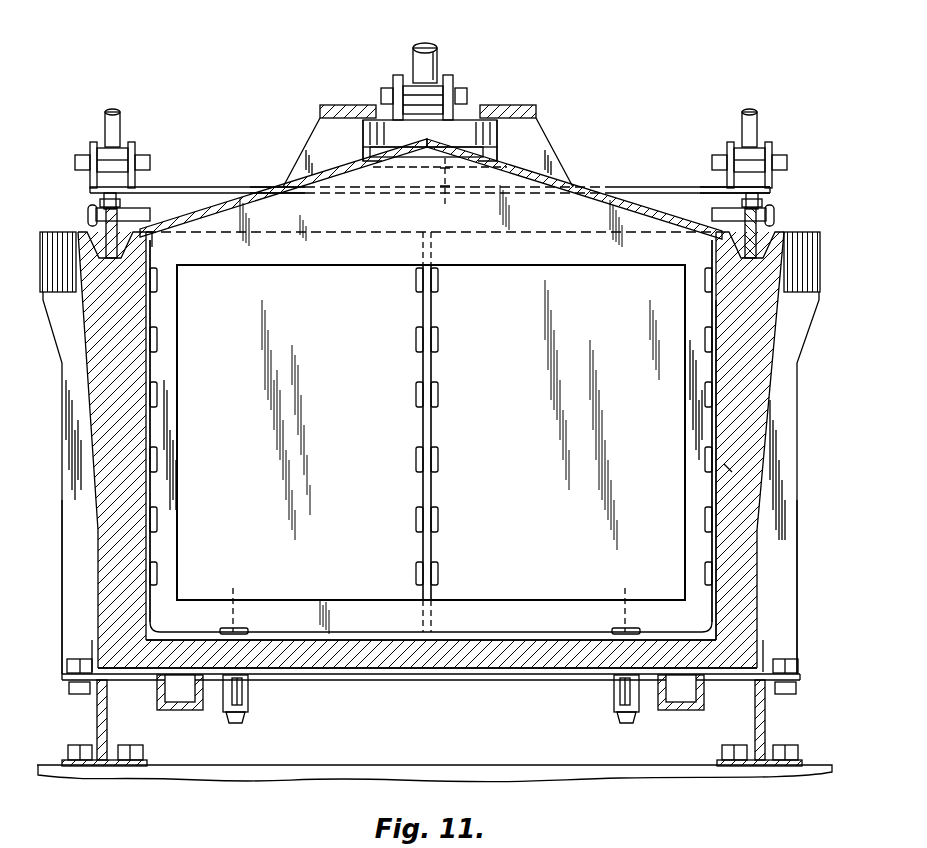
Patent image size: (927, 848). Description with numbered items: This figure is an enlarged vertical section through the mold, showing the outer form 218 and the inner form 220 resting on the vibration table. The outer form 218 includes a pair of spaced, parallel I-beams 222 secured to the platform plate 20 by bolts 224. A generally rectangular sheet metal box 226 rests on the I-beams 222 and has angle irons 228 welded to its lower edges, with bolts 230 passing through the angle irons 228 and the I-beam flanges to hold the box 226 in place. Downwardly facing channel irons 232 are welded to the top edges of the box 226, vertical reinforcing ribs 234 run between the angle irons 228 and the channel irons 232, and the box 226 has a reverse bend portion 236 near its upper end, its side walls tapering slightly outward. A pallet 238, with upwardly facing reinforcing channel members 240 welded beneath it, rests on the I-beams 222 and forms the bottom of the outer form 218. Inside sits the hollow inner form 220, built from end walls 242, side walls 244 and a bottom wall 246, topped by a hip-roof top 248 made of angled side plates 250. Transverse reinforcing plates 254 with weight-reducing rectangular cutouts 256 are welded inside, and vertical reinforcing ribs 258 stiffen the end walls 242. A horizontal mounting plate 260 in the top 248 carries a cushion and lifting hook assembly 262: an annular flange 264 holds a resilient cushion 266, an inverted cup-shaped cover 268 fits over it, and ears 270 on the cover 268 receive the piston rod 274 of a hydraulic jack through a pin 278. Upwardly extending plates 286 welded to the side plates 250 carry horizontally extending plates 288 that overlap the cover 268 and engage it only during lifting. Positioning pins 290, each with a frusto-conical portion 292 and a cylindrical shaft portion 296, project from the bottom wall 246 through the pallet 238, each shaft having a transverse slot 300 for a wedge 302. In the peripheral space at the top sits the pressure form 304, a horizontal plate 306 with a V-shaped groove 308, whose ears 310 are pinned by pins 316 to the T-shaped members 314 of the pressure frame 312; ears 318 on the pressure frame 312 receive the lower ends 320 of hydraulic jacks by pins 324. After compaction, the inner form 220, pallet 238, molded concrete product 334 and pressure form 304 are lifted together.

The platform plate 20 is at (410, 765).
The outer form 218 is at (806, 452).
The inner form 220 is at (650, 187).
The I-beams 222 is at (100, 722).
The bolts 224 is at (75, 752).
The sheet metal box 226 is at (103, 520).
The angle irons 228 is at (95, 645).
The bolts 230 is at (70, 662).
The channel irons 232 is at (48, 232).
The reinforcing ribs 234 is at (68, 430).
The reverse bend portion 236 is at (83, 323).
The pallet 238 is at (382, 668).
The reinforcing channel members 240 is at (172, 708).
The end walls 242 is at (517, 270).
The side walls 244 is at (150, 337).
The bottom wall 246 is at (448, 637).
The top 248 is at (231, 186).
The angled side plates 250 is at (322, 194).
The reinforcing plates 254 is at (583, 256).
The rectangular cutouts 256 is at (368, 270).
The vertical reinforcing ribs 258 is at (423, 435).
The mounting plate 260 is at (445, 160).
The cushion and lifting hook assembly 262 is at (470, 67).
The annular flange 264 is at (380, 162).
The resilient cushion 266 is at (483, 155).
The cup-shaped cover 268 is at (364, 133).
The ears 270 is at (398, 75).
The piston rod 274 is at (428, 43).
The pin 278 is at (464, 88).
The upwardly extending plates 286 is at (312, 128).
The horizontally extending plates 288 is at (348, 105).
The positioning pins 290 is at (432, 599).
The frusto-conical portion 292 is at (262, 642).
The cylindrical shaft portion 296 is at (240, 723).
The transverse slot 300 is at (244, 690).
The wedge 302 is at (248, 700).
The pressure form 304 is at (87, 233).
The horizontal plate 306 is at (152, 242).
The V-shaped groove 308 is at (125, 262).
The ears 310 is at (100, 200).
The pressure frame 312 is at (197, 179).
The T-shaped members 314 is at (262, 187).
The pins 316 is at (150, 216).
The ears 318 is at (92, 142).
The lower ends of hydraulic jacks 320 is at (108, 112).
The pins 324 is at (143, 160).
The molded concrete product 334 is at (733, 473).